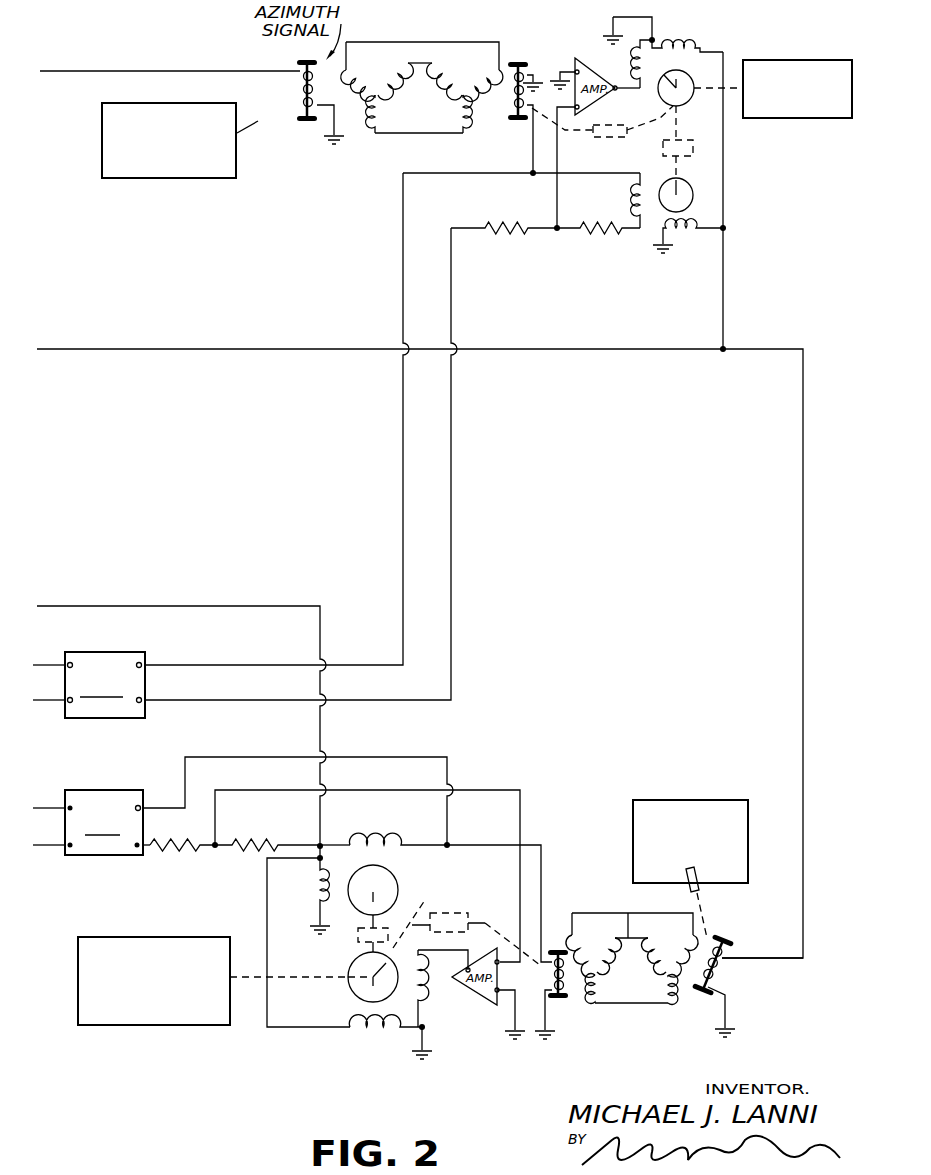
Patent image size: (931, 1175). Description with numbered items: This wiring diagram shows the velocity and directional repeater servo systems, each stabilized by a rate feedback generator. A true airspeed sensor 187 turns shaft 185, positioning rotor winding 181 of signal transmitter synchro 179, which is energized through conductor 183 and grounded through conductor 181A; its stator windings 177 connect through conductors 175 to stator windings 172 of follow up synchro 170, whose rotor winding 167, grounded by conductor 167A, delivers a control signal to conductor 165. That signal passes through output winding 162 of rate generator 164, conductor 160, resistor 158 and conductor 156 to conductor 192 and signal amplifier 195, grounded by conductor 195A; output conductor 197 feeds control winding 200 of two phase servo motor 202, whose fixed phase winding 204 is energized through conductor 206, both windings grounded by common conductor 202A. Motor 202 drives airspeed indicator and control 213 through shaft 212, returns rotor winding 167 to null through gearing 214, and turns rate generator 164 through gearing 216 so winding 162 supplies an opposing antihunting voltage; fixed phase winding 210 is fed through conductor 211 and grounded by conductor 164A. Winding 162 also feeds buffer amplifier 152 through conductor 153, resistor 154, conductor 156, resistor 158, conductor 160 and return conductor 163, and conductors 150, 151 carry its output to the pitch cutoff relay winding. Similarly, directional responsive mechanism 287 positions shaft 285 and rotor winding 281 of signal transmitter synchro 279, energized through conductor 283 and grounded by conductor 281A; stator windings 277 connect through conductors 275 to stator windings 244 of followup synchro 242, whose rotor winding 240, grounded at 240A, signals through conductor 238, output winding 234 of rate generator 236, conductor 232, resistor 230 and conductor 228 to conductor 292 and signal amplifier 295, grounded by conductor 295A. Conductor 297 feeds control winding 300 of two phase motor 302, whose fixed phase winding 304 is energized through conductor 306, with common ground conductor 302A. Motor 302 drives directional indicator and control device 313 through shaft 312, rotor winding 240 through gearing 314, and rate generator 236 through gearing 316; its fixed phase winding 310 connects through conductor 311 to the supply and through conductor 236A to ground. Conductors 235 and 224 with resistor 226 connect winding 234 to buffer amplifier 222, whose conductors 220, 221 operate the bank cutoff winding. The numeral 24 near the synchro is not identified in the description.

The conductor 283 is at (67, 74).
The directional responsive mechanism 287 is at (180, 178).
The shaft 285 is at (263, 128).
The rotor winding 281 is at (298, 84).
The conductor 281A is at (320, 119).
The signal transmitter synchro 279 is at (357, 123).
The synchro 24 is at (422, 87).
The stator windings 277 is at (372, 82).
The stator windings 244 is at (450, 85).
The electrical conductors 275 is at (420, 44).
The followup synchro 242 is at (512, 52).
The rotor winding 240 is at (508, 108).
The ground connection 240A is at (531, 70).
The conductor 238 is at (531, 155).
The conductor 292 is at (555, 200).
The conductor 297 is at (621, 91).
The conductor 295A is at (563, 72).
The signal amplifier 295 is at (597, 124).
The gearing 314 is at (608, 141).
The control winding 300 is at (637, 66).
The common conductor 302A is at (653, 27).
The fixed phase winding 304 is at (700, 44).
The conductor 306 is at (725, 192).
The shaft 312 is at (740, 80).
The directional indicator and directional control device 313 is at (778, 120).
The two phase motor 302 is at (684, 105).
The gearing 316 is at (695, 147).
The fixed phase winding 310 is at (691, 224).
The rate generator 236 is at (652, 178).
The output winding 234 is at (637, 200).
The conductor 236A is at (689, 242).
The conductor 311 is at (708, 228).
The resistor 226 is at (503, 236).
The conductor 228 is at (552, 232).
The resistor 230 is at (603, 236).
The conductor 232 is at (633, 235).
The conductor 235 is at (401, 268).
The conductor 224 is at (213, 702).
The electrical conductor 183 is at (70, 347).
The conductor 211 is at (146, 606).
The buffer amplifier 222 is at (105, 685).
The electrical conductor 220 is at (45, 663).
The electrical conductor 221 is at (44, 702).
The buffer amplifier 152 is at (104, 822).
The conductor 150 is at (42, 806).
The conductor 151 is at (46, 847).
The conductor 163 is at (163, 805).
The conductor 153 is at (148, 847).
The resistor 154 is at (172, 852).
The conductor 156 is at (217, 849).
The resistor 158 is at (252, 840).
The conductor 192 is at (475, 790).
The conductor 160 is at (331, 843).
The output winding 162 is at (380, 840).
The rate generator 164 is at (405, 882).
The fixed phase winding 210 is at (316, 895).
The conductor 164A is at (318, 923).
The shaft 212 is at (323, 971).
The reversible variable speed two phase motor 202 is at (343, 991).
The conductor 206 is at (305, 1029).
The fixed phase winding 204 is at (376, 1034).
The control winding 200 is at (428, 999).
The common conductor 202A is at (412, 1042).
The airspeed indicator and airspeed control 213 is at (142, 1028).
The gearing 216 is at (422, 912).
The gearing 214 is at (460, 906).
The output conductor 197 is at (432, 950).
The signal amplifier 195 is at (482, 993).
The conductor 195A is at (509, 1023).
The conductor 165 is at (543, 848).
The follow up synchro 170 is at (557, 936).
The rotor winding 167 is at (567, 976).
The conductor 167A is at (548, 1012).
The true airspeed sensing mechanism 187 is at (692, 800).
The shaft 185 is at (700, 889).
The electrical conductors 175 is at (632, 968).
The stator windings 172 is at (612, 977).
The stator windings 177 is at (673, 946).
The rotor winding 181 is at (722, 968).
The conductor 181A is at (731, 1010).
The signal transmitter synchro 179 is at (688, 998).